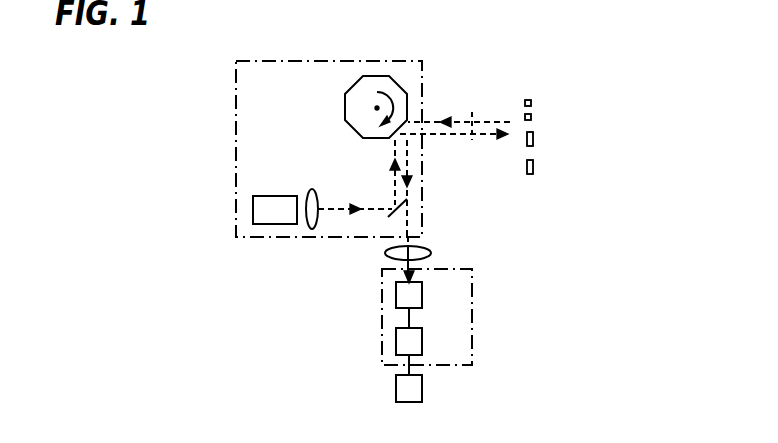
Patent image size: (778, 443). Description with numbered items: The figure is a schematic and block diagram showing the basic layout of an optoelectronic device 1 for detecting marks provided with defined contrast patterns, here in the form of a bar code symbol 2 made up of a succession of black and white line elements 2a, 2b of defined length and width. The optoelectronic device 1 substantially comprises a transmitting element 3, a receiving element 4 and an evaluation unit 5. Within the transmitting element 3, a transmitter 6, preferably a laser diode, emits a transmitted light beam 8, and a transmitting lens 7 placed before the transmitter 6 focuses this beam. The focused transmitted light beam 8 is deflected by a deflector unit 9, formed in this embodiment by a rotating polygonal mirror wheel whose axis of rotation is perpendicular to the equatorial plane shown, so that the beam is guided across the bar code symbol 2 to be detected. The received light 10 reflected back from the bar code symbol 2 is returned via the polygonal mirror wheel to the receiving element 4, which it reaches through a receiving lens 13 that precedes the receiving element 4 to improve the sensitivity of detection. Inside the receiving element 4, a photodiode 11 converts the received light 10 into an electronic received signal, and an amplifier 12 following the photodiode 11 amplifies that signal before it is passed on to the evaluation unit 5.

The optoelectronic device 1 is at (260, 54).
The bar code symbol 2 is at (526, 78).
The line element 2a is at (532, 102).
The line element 2b is at (525, 102).
The transmitting element 3 is at (236, 76).
The receiving element 4 is at (477, 305).
The evaluation unit 5 is at (422, 400).
The transmitter 6 is at (253, 210).
The transmitting lens 7 is at (318, 192).
The transmitted light beam 8 is at (471, 152).
The deflector unit 9 is at (353, 85).
The received light 10 is at (475, 101).
The photodiode 11 is at (396, 297).
The amplifier 12 is at (396, 341).
The receiving lens 13 is at (431, 253).